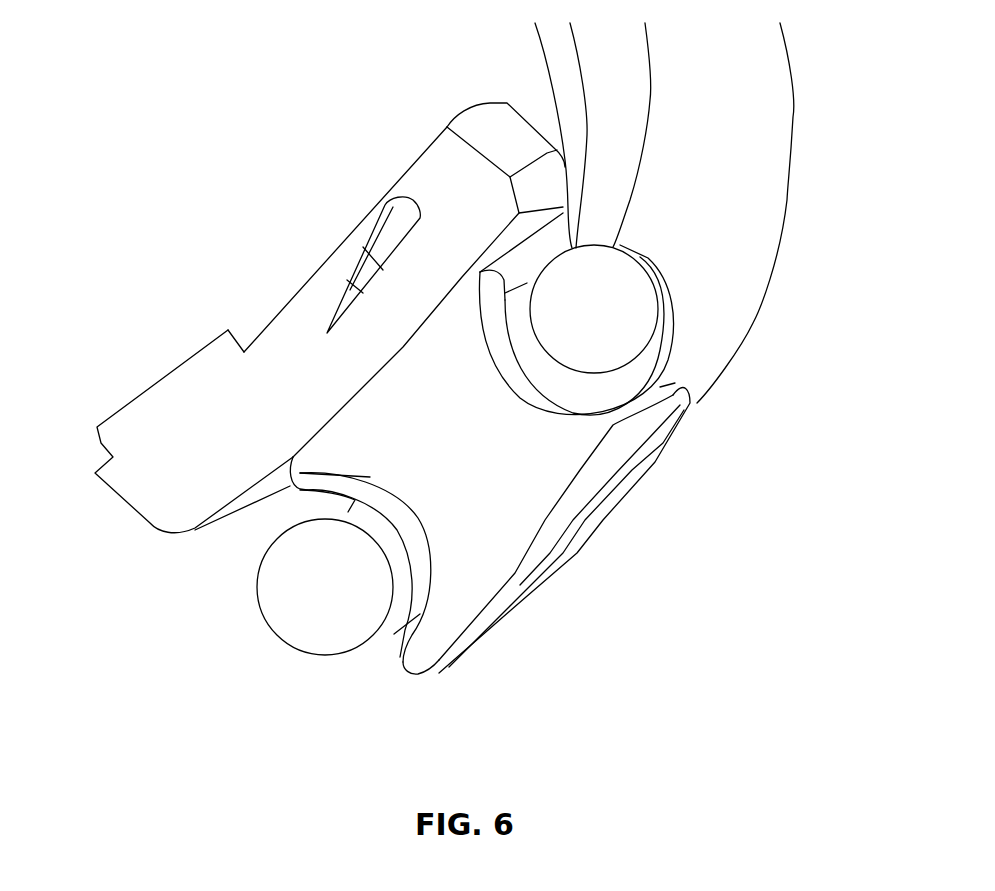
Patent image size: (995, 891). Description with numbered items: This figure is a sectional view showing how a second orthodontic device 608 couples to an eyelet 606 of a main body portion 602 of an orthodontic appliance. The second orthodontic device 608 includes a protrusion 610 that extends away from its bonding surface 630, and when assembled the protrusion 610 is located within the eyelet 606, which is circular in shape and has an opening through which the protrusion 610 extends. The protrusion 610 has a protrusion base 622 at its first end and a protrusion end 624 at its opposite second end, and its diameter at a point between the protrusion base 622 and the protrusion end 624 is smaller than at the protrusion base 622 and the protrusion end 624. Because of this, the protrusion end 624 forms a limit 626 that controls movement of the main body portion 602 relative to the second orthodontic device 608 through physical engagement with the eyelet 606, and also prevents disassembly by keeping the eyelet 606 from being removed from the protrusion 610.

The main body portion 602 is at (753, 323).
The eyelet 606 is at (620, 320).
The second orthodontic device 608 is at (290, 320).
The protrusion 610 is at (463, 454).
The protrusion base 622 is at (298, 490).
The protrusion end 624 is at (427, 675).
The limit 626 is at (550, 577).
The bonding surface 630 is at (140, 392).